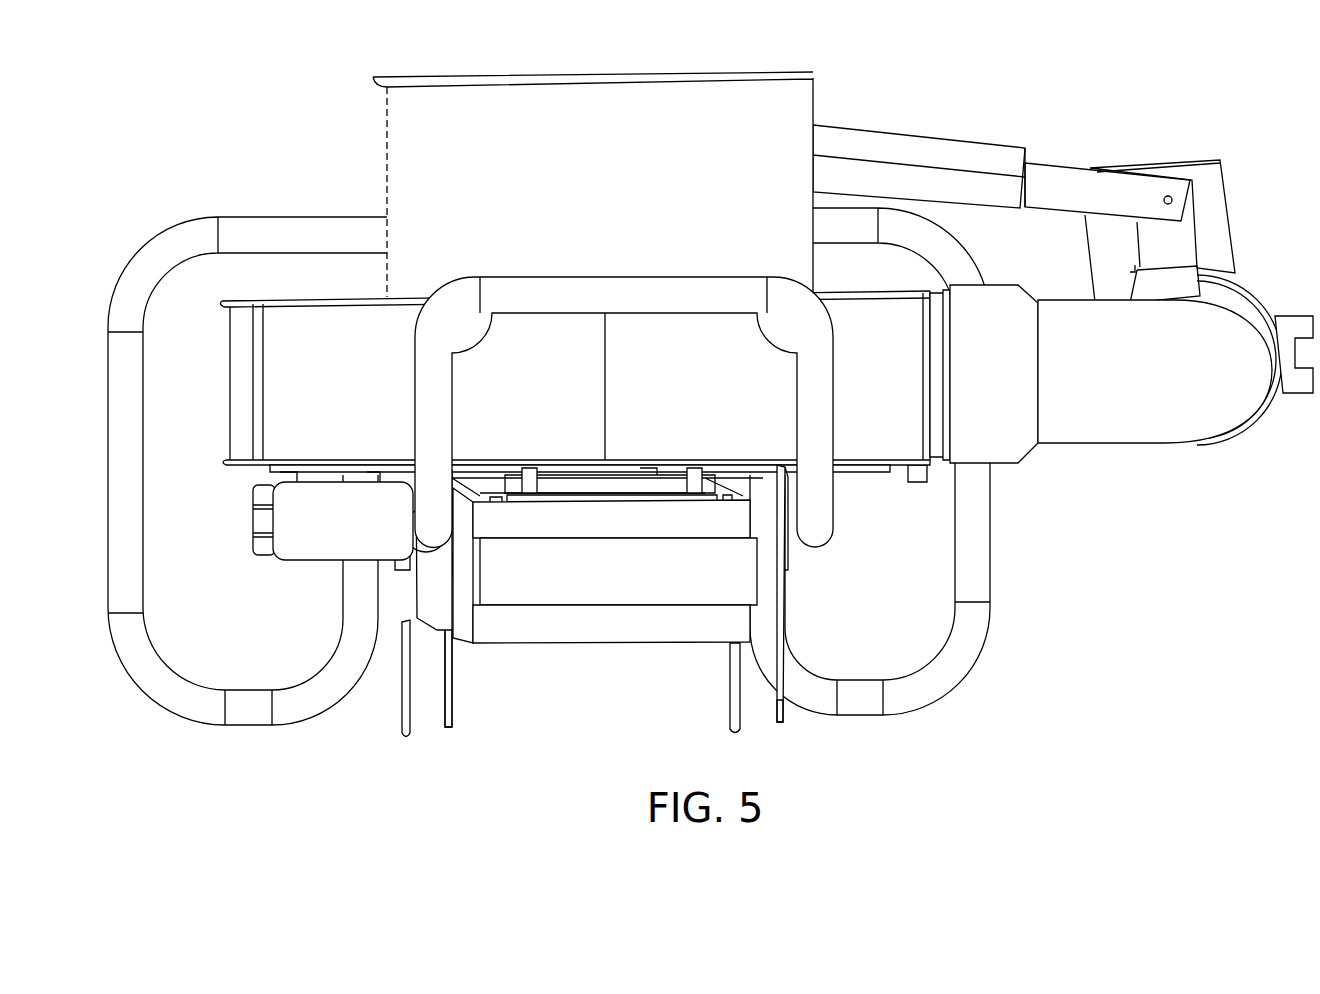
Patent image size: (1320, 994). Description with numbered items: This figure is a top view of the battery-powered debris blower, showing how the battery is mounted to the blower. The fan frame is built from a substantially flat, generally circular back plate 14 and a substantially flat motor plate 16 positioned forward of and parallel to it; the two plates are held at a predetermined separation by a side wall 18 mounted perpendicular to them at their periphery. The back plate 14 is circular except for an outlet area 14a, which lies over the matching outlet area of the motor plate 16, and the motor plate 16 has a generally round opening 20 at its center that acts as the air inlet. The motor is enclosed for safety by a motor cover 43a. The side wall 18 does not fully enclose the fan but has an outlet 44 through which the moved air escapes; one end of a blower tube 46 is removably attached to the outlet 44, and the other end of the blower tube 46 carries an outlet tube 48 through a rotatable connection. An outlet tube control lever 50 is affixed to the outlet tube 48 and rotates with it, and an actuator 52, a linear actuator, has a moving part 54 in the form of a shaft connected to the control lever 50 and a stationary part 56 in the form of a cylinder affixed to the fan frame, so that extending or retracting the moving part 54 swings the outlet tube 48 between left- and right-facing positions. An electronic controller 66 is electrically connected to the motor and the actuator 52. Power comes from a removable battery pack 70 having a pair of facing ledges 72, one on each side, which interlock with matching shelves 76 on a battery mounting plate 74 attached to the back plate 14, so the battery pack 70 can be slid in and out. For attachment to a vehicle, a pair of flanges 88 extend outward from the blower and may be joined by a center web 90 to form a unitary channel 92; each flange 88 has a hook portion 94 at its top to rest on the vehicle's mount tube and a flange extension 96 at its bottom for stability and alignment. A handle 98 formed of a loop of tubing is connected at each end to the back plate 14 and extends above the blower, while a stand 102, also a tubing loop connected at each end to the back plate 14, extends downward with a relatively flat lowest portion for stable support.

The back plate 14 is at (237, 464).
The outlet area 14a is at (860, 465).
The motor plate 16 is at (276, 298).
The side wall 18 is at (238, 390).
The opening 20 is at (892, 450).
The motor cover 43a is at (814, 98).
The outlet 44 is at (930, 480).
The blower tube 46 is at (1113, 437).
The outlet tube 48 is at (1215, 158).
The outlet tube control lever 50 is at (1190, 235).
The actuator 52 is at (1032, 152).
The moving part 54 is at (1058, 166).
The stationary part 56 is at (935, 150).
The electronic controller 66 is at (262, 527).
The battery pack 70 is at (560, 643).
The ledges 72 is at (483, 497).
The battery mounting plate 74 is at (585, 496).
The shelves 76 is at (506, 492).
The flanges 88 is at (418, 603).
The center web 90 is at (650, 462).
The unitary channel 92 is at (566, 473).
The hook portion 94 is at (448, 714).
The flange extension 96 is at (402, 712).
The handle 98 is at (618, 288).
The stand 102 is at (985, 578).